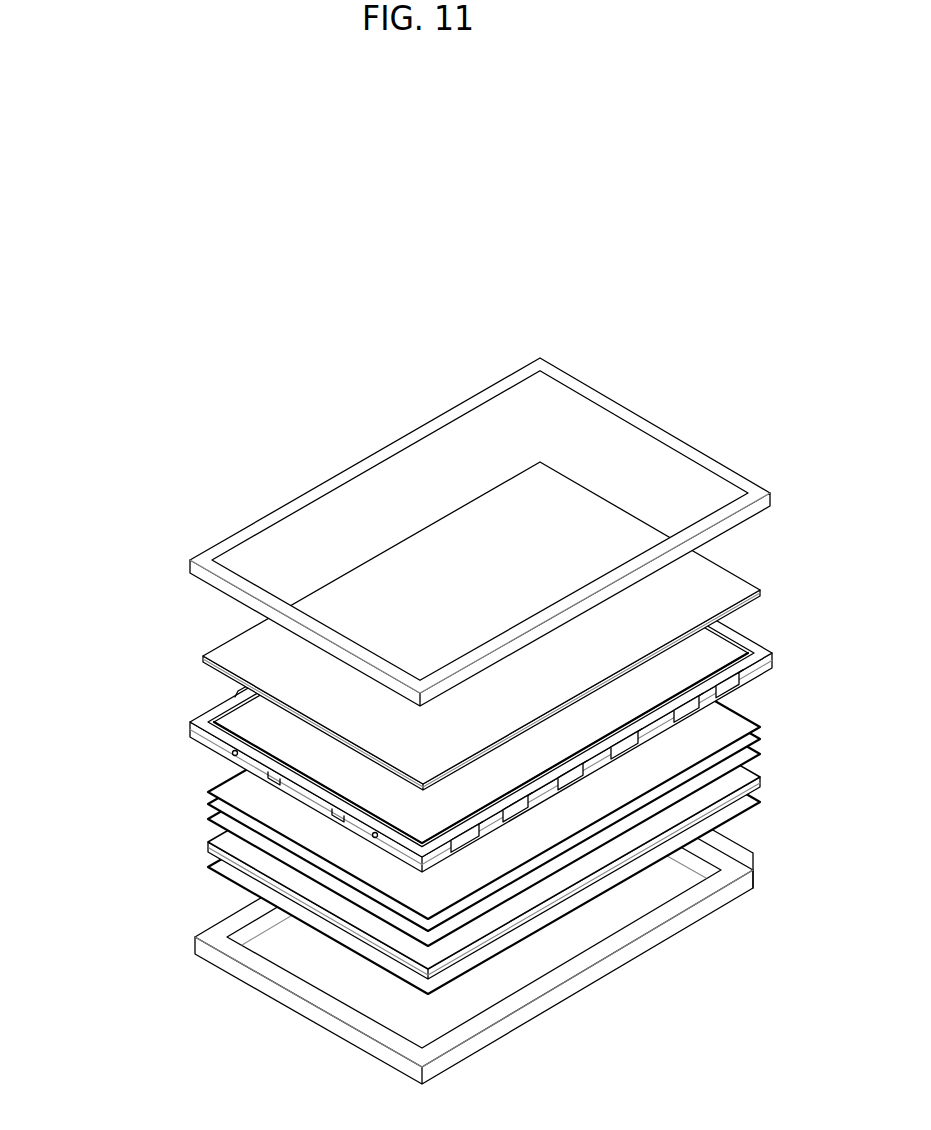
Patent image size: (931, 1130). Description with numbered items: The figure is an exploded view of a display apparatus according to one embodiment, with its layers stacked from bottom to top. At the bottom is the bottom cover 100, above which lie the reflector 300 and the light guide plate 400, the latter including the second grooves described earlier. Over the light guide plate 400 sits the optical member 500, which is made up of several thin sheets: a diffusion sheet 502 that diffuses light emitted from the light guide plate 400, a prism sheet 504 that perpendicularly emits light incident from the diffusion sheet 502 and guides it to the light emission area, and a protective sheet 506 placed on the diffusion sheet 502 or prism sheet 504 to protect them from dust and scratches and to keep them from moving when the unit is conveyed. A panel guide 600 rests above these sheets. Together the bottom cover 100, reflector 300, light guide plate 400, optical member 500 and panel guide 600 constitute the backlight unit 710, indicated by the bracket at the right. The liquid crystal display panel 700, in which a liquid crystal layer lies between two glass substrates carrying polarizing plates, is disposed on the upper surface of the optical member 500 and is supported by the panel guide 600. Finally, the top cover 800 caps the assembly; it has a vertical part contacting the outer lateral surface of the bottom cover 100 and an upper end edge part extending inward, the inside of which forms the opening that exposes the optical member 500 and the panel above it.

The bottom cover 100 is at (538, 1006).
The reflector 300 is at (214, 870).
The light guide plate 400 is at (214, 844).
The optical member 500 is at (391, 773).
The diffusion sheet 502 is at (216, 823).
The prism sheet 504 is at (216, 806).
The protective sheet 506 is at (216, 793).
The panel guide 600 is at (197, 718).
The liquid crystal display panel 700 is at (732, 578).
The backlight unit 710 is at (436, 801).
The top cover 800 is at (743, 476).